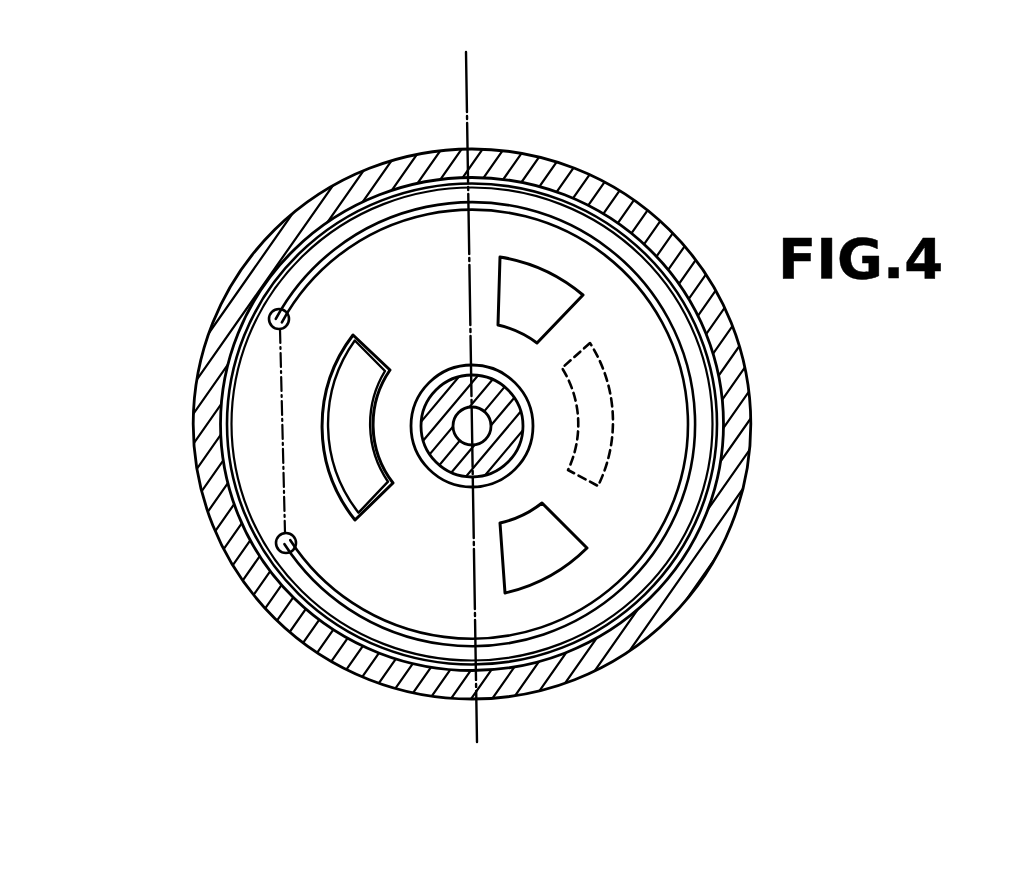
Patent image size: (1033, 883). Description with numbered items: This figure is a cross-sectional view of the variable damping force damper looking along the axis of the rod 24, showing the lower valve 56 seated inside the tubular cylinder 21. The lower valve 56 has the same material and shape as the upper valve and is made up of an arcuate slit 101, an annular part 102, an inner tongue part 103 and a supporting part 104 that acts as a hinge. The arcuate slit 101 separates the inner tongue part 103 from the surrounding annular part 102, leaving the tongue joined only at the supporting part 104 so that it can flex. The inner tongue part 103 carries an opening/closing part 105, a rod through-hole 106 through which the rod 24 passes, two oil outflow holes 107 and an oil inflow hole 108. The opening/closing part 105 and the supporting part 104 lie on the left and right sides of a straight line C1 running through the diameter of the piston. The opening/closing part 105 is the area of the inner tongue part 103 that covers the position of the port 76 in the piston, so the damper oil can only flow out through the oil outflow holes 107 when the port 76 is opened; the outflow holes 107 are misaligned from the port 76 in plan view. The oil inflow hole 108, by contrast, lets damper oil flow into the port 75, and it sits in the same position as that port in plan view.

The straight line C1 is at (463, 93).
The cylinder 21 is at (279, 224).
The arcuate slit 101 is at (343, 242).
The annular part 102 is at (478, 176).
The inner tongue part 103 is at (515, 213).
The lower valve 56 is at (248, 327).
The supporting part 104 is at (279, 388).
The rod 24 is at (438, 478).
The rod through-hole 106 is at (462, 382).
The oil outflow holes 107 is at (538, 282).
The opening/closing part 105 is at (605, 382).
The port 76 is at (610, 442).
The port 75 is at (330, 454).
The oil inflow hole 108 is at (341, 501).